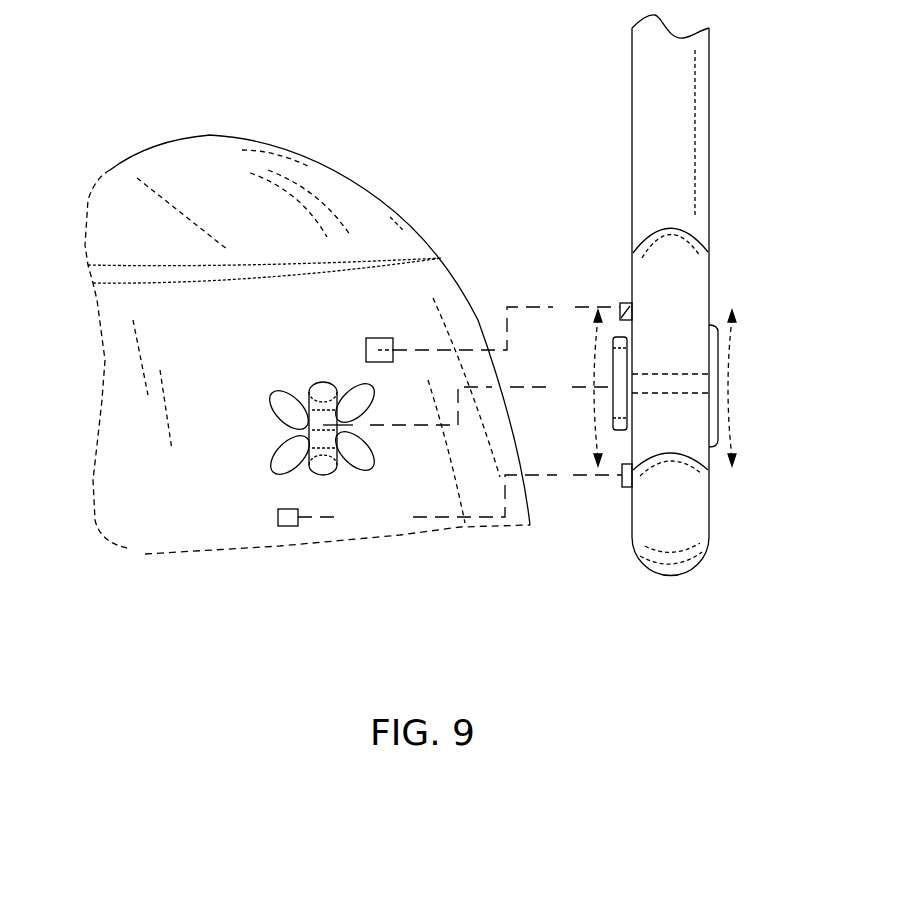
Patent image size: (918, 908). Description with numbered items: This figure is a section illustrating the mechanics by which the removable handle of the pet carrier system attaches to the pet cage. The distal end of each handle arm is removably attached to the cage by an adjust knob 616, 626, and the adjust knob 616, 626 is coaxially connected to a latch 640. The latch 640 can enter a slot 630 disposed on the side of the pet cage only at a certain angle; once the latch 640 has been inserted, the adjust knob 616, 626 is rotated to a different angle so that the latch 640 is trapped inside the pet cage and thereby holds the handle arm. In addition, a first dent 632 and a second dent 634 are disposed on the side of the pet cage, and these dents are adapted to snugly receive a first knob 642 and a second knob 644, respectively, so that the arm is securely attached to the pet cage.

The first adjust knob 616 is at (711, 295).
The second adjust knob 626 is at (732, 278).
The slot 630 is at (277, 400).
The first dent 632 is at (363, 347).
The second dent 634 is at (276, 521).
The latch 640 is at (622, 380).
The first knob 642 is at (622, 305).
The second knob 644 is at (622, 485).